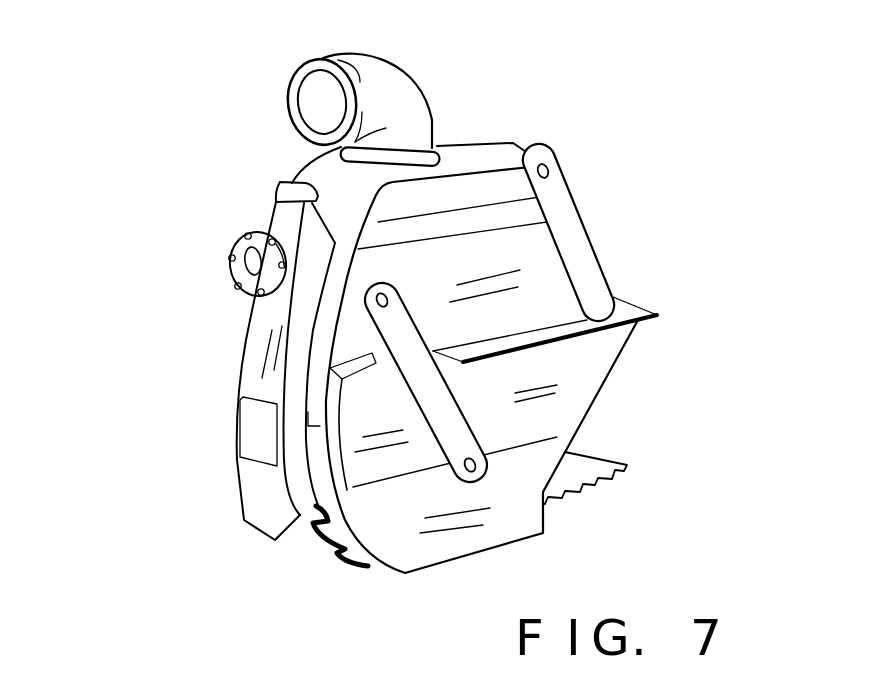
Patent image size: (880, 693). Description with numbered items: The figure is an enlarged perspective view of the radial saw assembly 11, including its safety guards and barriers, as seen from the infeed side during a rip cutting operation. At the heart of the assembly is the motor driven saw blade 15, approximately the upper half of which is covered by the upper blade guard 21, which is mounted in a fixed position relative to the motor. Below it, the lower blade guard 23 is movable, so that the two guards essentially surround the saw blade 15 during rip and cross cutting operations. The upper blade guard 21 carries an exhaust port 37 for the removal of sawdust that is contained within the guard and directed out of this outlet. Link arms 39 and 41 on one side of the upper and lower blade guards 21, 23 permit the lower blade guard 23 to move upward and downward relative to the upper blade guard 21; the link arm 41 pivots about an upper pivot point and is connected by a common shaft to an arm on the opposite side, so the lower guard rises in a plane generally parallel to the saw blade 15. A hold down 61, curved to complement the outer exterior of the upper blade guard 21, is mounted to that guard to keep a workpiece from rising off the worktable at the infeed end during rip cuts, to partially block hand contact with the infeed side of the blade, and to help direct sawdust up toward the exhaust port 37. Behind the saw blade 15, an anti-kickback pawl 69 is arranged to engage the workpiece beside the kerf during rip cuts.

The radial saw assembly 11 is at (212, 198).
The motor driven saw blade 15 is at (338, 533).
The upper blade guard 21 is at (348, 343).
The lower blade guard 23 is at (500, 528).
The exhaust port 37 is at (387, 92).
The link arm 39 is at (423, 393).
The link arm 41 is at (558, 208).
The hold down 61 is at (250, 368).
The anti-kickback pawl 69 is at (577, 473).